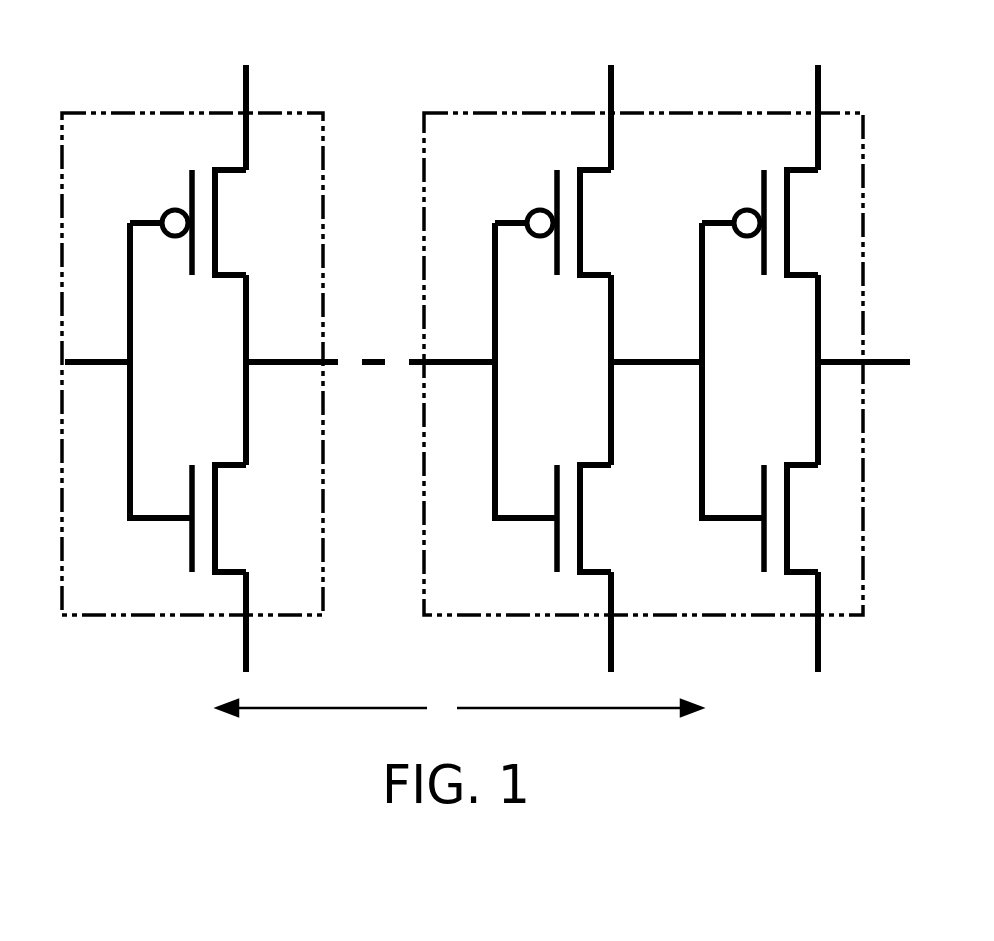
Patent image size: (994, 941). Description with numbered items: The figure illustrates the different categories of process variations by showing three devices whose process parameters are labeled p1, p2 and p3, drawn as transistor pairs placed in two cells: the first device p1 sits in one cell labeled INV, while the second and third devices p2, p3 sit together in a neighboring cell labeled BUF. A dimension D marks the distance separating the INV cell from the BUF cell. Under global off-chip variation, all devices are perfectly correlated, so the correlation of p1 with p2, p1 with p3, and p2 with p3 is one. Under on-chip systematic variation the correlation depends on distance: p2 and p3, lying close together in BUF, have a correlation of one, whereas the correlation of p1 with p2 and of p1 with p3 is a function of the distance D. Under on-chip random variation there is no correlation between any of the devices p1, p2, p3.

The inverter INV is at (243, 348).
The buffer BUF is at (696, 348).
The process parameter of first device p1 is at (167, 367).
The process parameter of second device p2 is at (529, 367).
The process parameter of third device p3 is at (760, 367).
The distance D is at (459, 708).